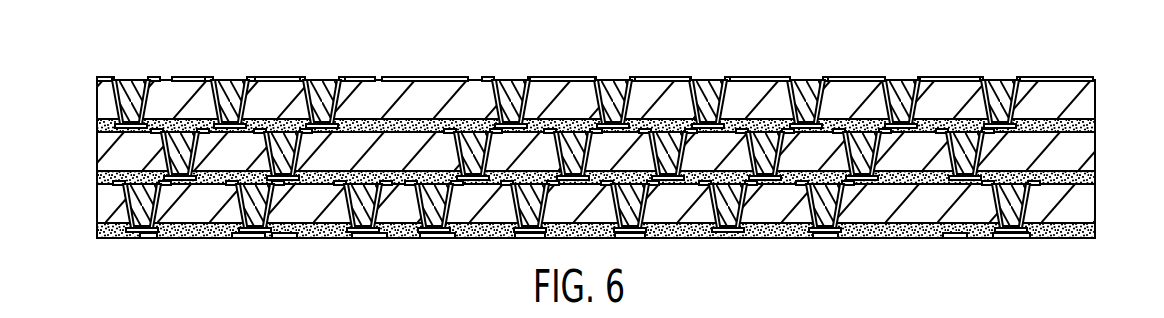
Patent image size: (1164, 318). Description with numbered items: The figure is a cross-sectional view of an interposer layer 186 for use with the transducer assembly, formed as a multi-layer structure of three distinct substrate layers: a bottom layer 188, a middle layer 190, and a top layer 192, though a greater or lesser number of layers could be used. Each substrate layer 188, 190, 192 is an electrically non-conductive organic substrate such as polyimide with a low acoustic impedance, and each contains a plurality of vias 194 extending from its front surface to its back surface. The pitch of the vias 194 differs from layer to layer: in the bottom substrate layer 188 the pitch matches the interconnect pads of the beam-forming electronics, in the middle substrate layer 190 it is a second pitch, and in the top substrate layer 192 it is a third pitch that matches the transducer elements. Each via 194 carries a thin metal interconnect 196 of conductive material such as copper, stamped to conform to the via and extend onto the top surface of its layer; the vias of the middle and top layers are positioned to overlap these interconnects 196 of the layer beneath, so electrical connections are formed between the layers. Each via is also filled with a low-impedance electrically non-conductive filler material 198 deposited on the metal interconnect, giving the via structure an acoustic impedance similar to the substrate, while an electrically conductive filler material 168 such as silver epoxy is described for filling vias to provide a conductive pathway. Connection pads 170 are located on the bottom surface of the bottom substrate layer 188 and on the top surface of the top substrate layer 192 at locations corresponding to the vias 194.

The interposer layer 186 is at (986, 41).
The bottom substrate layer 188 is at (96, 207).
The middle substrate layer 190 is at (96, 153).
The top substrate layer 192 is at (92, 101).
The electrically conductive filler material 168 is at (232, 104).
The connection pads 170 is at (433, 240).
The vias 194 is at (802, 71).
The metal interconnect 196 is at (145, 235).
The electrically non-conductive filler material 198 is at (729, 232).